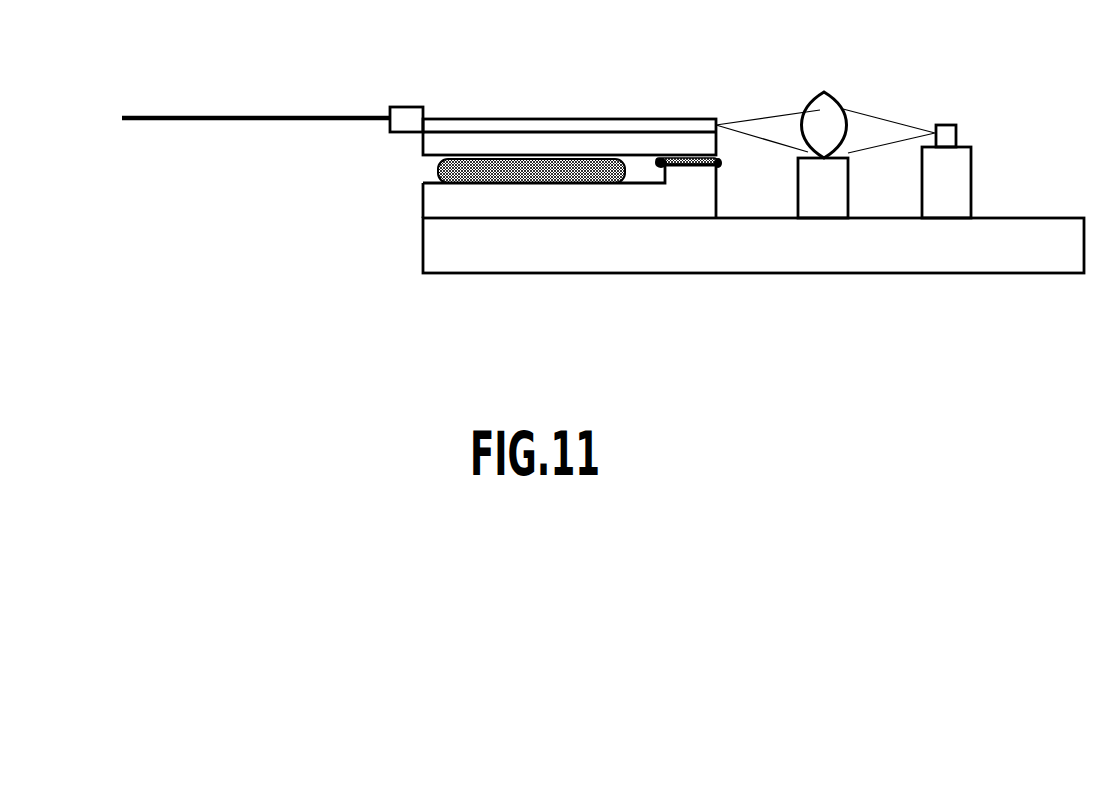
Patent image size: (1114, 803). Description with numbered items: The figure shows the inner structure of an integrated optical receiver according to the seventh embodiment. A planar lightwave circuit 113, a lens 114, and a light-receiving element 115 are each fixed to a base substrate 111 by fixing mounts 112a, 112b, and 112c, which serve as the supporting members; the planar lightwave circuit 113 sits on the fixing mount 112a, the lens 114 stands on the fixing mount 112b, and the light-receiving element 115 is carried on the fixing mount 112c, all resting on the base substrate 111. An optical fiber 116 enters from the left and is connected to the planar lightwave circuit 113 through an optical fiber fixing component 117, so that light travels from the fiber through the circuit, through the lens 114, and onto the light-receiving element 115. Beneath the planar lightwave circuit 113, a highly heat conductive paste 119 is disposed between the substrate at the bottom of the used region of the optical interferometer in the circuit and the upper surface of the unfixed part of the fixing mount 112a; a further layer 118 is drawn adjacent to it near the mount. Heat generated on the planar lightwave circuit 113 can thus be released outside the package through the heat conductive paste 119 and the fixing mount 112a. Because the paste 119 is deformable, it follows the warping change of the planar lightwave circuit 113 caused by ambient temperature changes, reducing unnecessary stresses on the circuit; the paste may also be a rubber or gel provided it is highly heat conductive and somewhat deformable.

The base substrate 111 is at (1047, 217).
The fixing mount 112a is at (437, 203).
The fixing mount 112b is at (825, 197).
The fixing mount 112c is at (955, 197).
The planar lightwave circuit 113 is at (638, 167).
The lens 114 is at (838, 92).
The light-receiving element 115 is at (948, 125).
The optical fiber 116 is at (265, 117).
The optical fiber fixing component 117 is at (413, 107).
The adhesive layer 118 is at (720, 159).
The heat conductive paste 119 is at (437, 167).